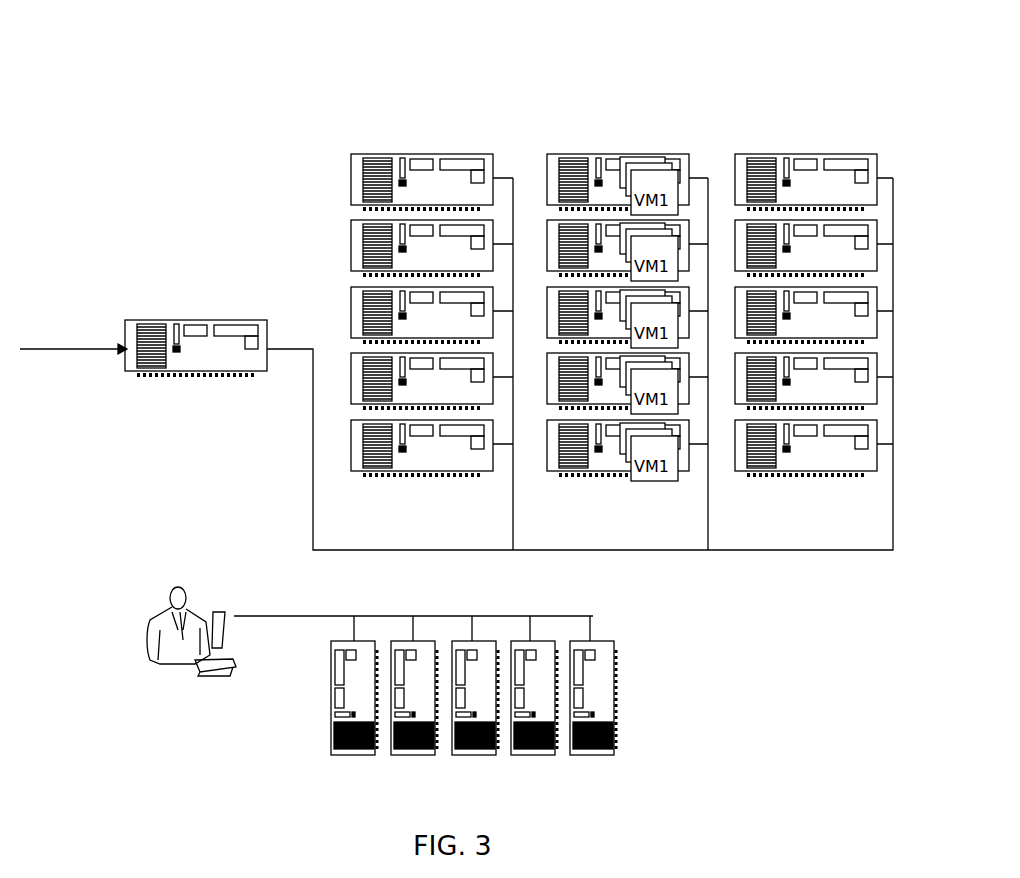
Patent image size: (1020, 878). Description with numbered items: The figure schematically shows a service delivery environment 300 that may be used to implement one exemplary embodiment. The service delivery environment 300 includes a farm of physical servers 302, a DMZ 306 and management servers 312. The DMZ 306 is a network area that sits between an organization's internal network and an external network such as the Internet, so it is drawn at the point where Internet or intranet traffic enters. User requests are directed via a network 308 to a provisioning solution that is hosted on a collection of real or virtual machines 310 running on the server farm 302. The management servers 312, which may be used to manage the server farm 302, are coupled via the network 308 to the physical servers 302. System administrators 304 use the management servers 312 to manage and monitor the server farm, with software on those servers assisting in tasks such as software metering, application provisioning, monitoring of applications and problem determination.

The service delivery environment 300 is at (404, 36).
The farm of physical servers 302 is at (353, 143).
The system administrators 304 is at (199, 672).
The DMZ (demilitarized zone) 306 is at (213, 320).
The network 308 is at (777, 550).
The real or virtual machines 310 is at (645, 482).
The management servers 312 is at (617, 722).